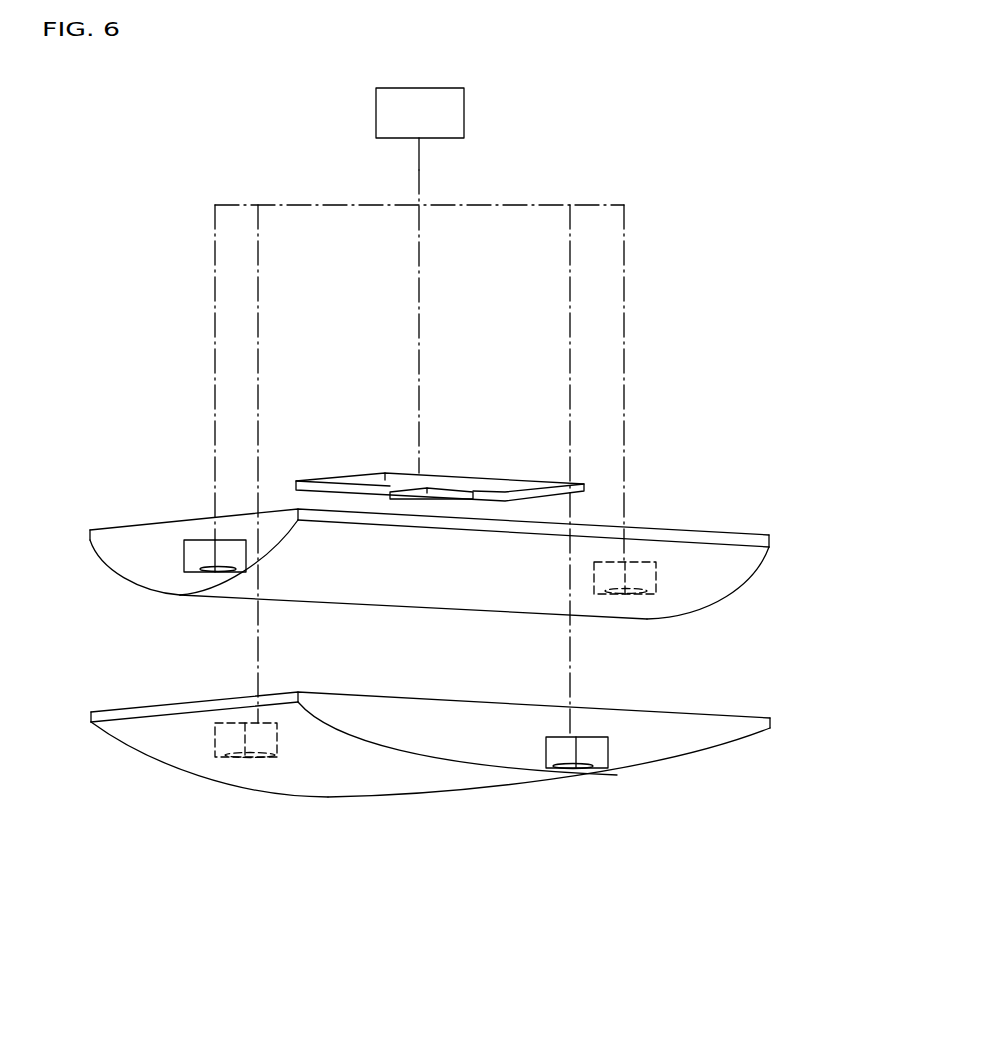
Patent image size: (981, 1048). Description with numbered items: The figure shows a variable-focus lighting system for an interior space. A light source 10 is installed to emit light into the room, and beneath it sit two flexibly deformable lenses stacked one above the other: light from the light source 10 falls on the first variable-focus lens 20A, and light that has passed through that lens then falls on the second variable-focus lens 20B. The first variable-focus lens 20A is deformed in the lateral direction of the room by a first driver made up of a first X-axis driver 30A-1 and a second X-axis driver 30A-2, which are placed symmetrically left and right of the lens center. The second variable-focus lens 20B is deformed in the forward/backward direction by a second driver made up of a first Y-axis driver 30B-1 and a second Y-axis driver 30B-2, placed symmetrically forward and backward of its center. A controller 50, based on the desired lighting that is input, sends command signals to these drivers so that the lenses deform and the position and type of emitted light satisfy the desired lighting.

The controller 50 is at (456, 108).
The light source 10 is at (361, 472).
The first variable-focus lens 20A is at (718, 602).
The second variable-focus lens 20B is at (417, 800).
The first X-axis driver 30A-1 is at (192, 548).
The second X-axis driver 30A-2 is at (647, 567).
The first Y-axis driver 30B-1 is at (592, 757).
The second Y-axis driver 30B-2 is at (227, 747).